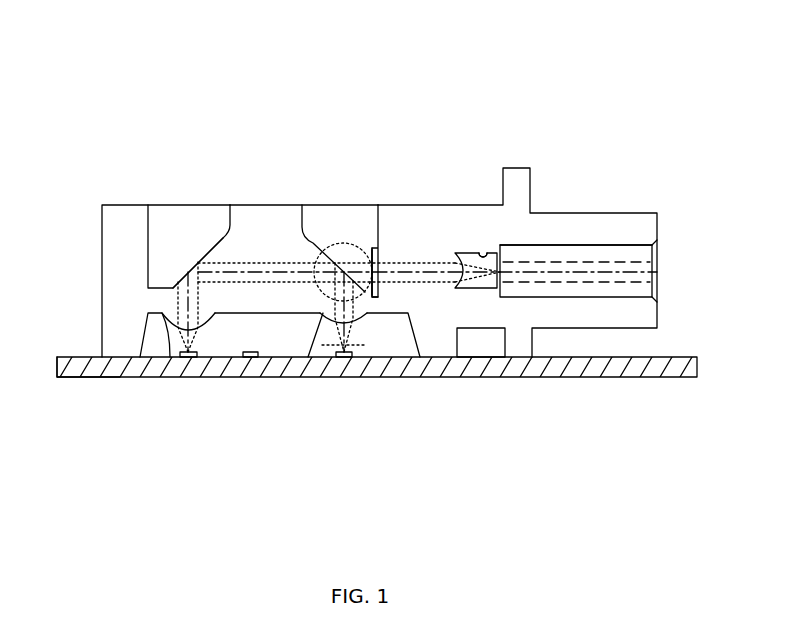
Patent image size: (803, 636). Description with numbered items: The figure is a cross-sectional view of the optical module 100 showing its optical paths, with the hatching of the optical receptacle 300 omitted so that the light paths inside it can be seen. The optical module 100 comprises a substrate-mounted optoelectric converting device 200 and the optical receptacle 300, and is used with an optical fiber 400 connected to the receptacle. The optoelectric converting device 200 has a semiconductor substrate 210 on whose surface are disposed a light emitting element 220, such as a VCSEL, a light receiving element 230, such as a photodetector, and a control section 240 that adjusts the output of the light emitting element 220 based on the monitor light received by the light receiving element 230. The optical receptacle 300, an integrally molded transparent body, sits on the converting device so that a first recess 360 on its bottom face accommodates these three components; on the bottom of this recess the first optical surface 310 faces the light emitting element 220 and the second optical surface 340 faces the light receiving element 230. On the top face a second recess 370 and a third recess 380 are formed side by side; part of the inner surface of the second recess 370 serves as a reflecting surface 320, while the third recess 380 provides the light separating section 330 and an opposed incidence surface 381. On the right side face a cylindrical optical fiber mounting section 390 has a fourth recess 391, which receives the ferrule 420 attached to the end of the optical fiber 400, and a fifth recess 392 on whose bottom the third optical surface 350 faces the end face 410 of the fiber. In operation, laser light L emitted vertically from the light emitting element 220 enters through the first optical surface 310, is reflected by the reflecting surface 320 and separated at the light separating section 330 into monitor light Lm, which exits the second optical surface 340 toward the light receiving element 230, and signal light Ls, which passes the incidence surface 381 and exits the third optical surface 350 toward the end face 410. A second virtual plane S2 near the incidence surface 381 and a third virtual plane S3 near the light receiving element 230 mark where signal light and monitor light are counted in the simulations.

The optical module 100 is at (525, 75).
The optoelectric converting device 200 is at (662, 395).
The semiconductor substrate 210 is at (70, 373).
The light emitting element 220 is at (189, 357).
The light receiving element 230 is at (344, 357).
The control section 240 is at (250, 357).
The optical receptacle 300 is at (660, 192).
The first optical surface 310 is at (163, 345).
The reflecting surface 320 is at (233, 243).
The light separating section 330 is at (315, 246).
The second optical surface 340 is at (324, 330).
The third optical surface 350 is at (455, 256).
The first recess 360 is at (413, 368).
The second recess 370 is at (190, 195).
The third recess 380 is at (328, 195).
The incidence surface 381 is at (379, 243).
The optical fiber mounting section 390 is at (672, 282).
The fourth recess 391 is at (612, 257).
The fifth recess 392 is at (483, 255).
The optical fiber 400 is at (588, 283).
The end face 410 is at (497, 284).
The ferrule 420 is at (633, 288).
The laser light L is at (178, 309).
The signal light Ls is at (407, 262).
The monitor light Lm is at (353, 346).
The second virtual plane S2 is at (372, 250).
The third virtual plane S3 is at (362, 347).